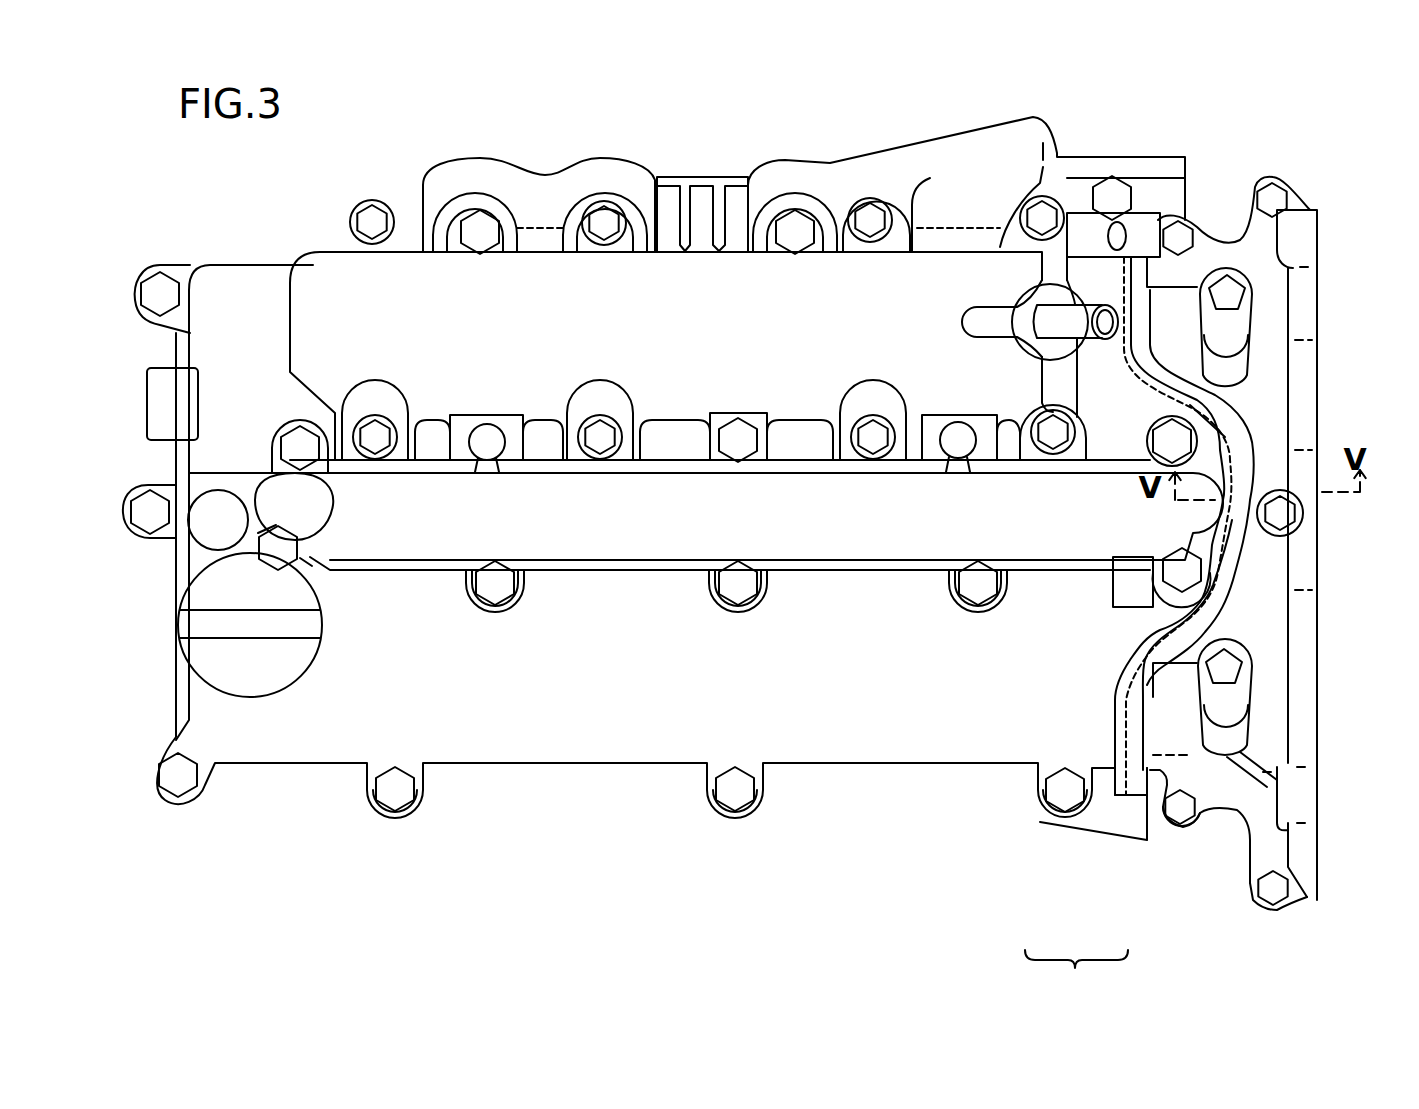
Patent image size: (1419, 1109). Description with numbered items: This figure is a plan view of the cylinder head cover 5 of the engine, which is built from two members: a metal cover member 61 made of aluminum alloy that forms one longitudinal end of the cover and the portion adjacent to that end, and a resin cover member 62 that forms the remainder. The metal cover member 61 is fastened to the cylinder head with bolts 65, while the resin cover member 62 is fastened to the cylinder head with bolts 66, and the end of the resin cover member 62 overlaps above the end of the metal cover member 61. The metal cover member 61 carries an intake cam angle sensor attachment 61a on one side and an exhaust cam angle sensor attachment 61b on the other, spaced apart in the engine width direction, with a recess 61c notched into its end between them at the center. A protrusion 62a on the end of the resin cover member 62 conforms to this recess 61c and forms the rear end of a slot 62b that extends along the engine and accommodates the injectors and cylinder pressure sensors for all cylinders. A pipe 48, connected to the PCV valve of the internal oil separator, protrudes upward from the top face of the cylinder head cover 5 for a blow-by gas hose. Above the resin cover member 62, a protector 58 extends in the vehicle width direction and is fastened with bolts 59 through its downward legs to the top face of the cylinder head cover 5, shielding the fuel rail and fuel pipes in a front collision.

The cylinder head cover 5 is at (1076, 973).
The pipe 48 is at (1082, 330).
The protector 58 is at (955, 272).
The bolts 59 is at (378, 218).
The metal cover member 61 is at (1235, 832).
The intake cam angle sensor attachment 61a is at (1228, 700).
The exhaust cam angle sensor attachment 61b is at (1228, 318).
The recess 61c is at (1228, 555).
The resin cover member 62 is at (1008, 800).
The protrusion 62a is at (1245, 432).
The slot 62b is at (948, 530).
The bolts 65 is at (1178, 235).
The bolts 66 is at (160, 290).